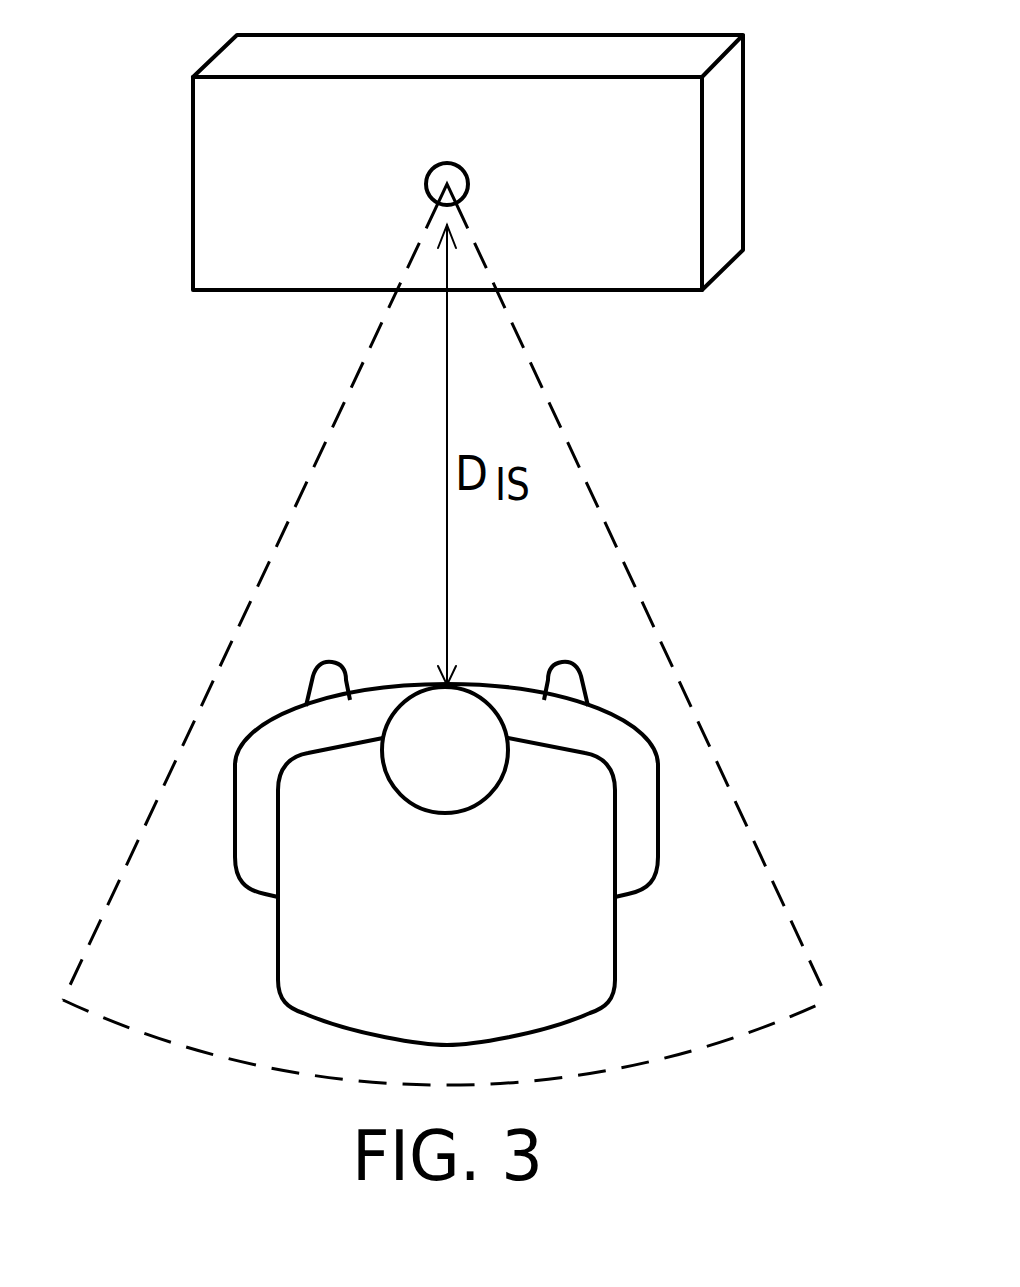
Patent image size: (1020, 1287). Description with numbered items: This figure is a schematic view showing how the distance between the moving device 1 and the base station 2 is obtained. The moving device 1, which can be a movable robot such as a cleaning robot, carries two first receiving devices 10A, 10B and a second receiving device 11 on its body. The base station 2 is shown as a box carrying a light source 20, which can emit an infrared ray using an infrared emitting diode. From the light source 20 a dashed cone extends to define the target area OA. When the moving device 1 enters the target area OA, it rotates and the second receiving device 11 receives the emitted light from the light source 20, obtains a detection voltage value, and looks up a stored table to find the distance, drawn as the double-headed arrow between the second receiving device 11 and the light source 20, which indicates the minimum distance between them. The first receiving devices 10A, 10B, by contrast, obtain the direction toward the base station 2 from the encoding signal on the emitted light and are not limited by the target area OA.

The moving device 1 is at (636, 960).
The base station 2 is at (743, 140).
The first receiving device 10A is at (306, 693).
The first receiving device 10B is at (590, 693).
The second receiving device 11 is at (503, 777).
The light source 20 is at (426, 183).
The target area OA is at (574, 447).